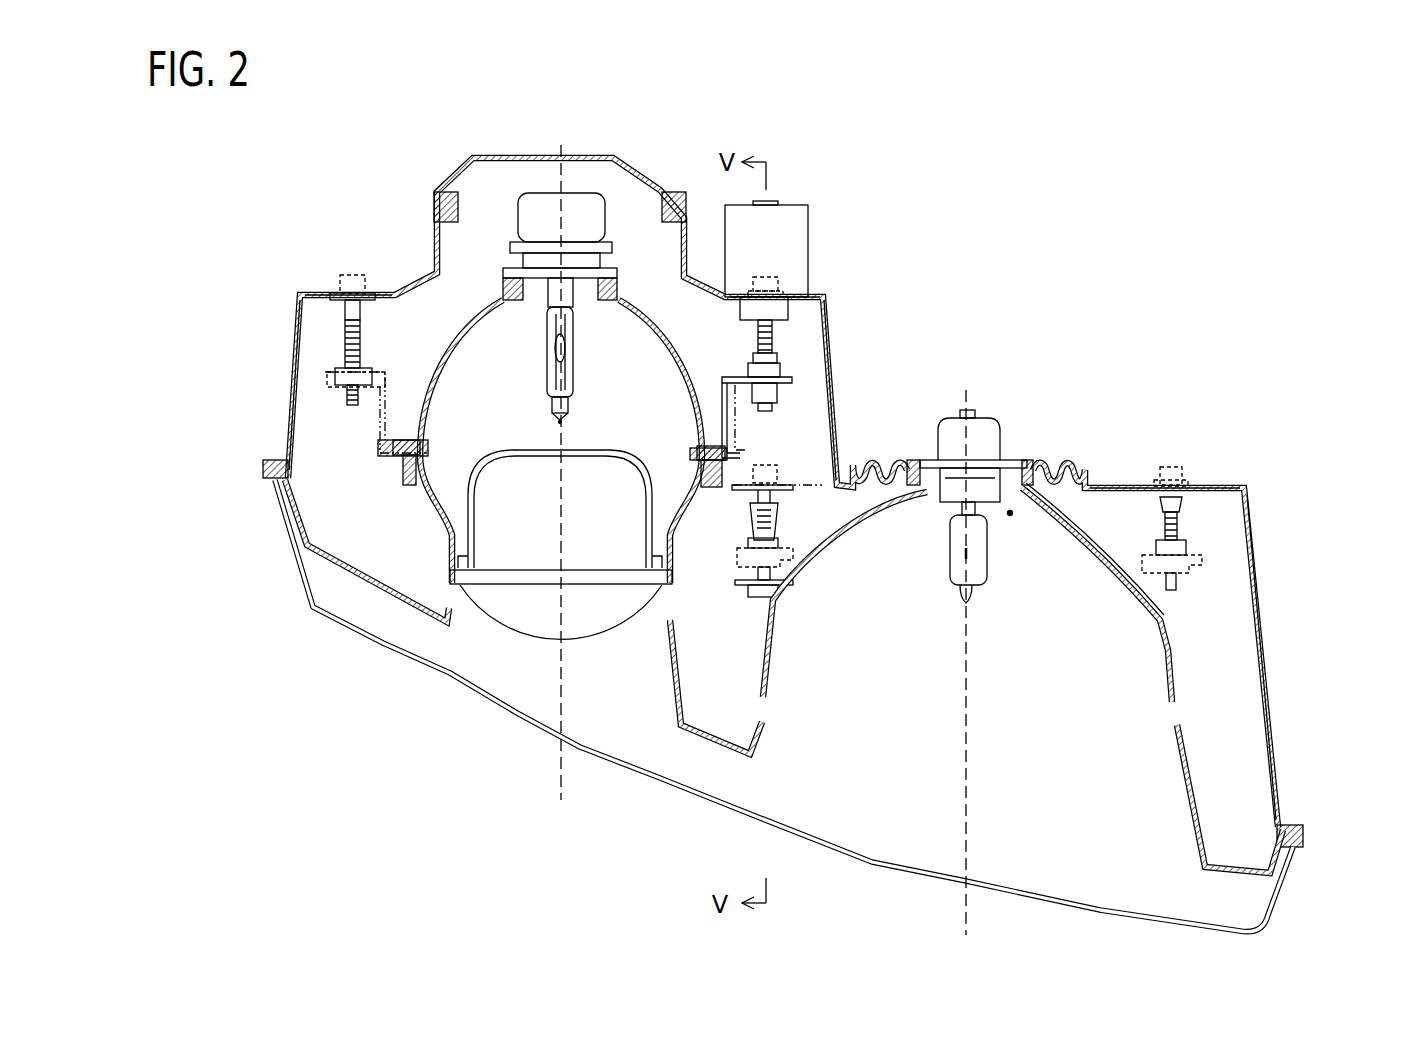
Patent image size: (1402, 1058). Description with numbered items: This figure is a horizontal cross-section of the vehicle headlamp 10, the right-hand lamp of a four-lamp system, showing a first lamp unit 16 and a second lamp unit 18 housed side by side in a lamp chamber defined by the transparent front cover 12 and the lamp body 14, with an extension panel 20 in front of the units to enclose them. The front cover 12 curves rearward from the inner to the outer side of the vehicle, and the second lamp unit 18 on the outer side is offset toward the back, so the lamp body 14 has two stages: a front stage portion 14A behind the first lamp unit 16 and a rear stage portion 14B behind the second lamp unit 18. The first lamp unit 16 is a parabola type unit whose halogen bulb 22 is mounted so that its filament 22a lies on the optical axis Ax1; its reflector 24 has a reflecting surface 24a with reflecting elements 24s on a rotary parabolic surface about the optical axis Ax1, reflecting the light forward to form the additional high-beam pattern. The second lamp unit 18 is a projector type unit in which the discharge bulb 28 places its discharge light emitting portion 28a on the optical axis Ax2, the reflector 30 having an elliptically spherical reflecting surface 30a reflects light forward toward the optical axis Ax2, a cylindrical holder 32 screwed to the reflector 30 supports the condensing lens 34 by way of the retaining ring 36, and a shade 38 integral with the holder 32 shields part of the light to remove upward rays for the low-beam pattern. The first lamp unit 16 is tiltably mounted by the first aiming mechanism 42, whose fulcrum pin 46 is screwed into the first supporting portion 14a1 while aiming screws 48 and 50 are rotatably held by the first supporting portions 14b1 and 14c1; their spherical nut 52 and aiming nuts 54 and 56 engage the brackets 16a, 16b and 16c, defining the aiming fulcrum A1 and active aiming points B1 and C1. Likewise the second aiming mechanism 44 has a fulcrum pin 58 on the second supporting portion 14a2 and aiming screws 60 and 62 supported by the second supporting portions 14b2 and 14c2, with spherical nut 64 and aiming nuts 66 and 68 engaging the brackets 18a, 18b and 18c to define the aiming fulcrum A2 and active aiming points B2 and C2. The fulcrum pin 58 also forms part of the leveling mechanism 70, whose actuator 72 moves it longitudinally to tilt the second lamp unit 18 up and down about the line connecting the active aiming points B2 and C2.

The vehicle headlamp 10 is at (1210, 265).
The front cover 12 is at (872, 855).
The lamp body 14 is at (1262, 487).
The front stage portion 14A is at (1093, 485).
The rear stage portion 14B is at (817, 283).
The first supporting portion 14a1 is at (940, 390).
The first supporting portion 14c1 is at (843, 410).
The second supporting portion 14a2 is at (861, 250).
The second supporting portion 14c2 is at (800, 275).
The first supporting portion 14b1 is at (1203, 486).
The second supporting portion 14b2 is at (323, 292).
The first lamp unit 16 is at (1027, 735).
The bracket 16a is at (798, 587).
The bracket 16b is at (1173, 593).
The bracket 16c is at (803, 557).
The second lamp unit 18 is at (498, 665).
The bracket 18a is at (723, 410).
The bracket 18b is at (380, 410).
The bracket 18c is at (740, 413).
The extension panel 20 is at (722, 742).
The halogen bulb 22 is at (983, 539).
The filament 22a is at (970, 553).
The reflector 24 is at (1088, 527).
The reflecting surface 24a is at (1115, 578).
The reflecting elements 24s is at (1082, 530).
The discharge bulb 28 is at (610, 324).
The discharge light emitting portion 28a is at (550, 349).
The reflector 30 is at (478, 300).
The reflecting surface 30a is at (643, 332).
The holder 32 is at (438, 490).
The condensing lens 34 is at (598, 625).
The retaining ring 36 is at (450, 570).
The shade 38 is at (590, 450).
The first aiming mechanism 42 is at (1237, 543).
The second aiming mechanism 44 is at (310, 360).
The fulcrum pin 46 is at (750, 563).
The aiming screw 48 is at (1165, 535).
The aiming screw 50 is at (743, 527).
The spherical nut 52 is at (770, 593).
The aiming nut 54 is at (1195, 575).
The aiming nut 56 is at (807, 577).
The fulcrum pin 58 is at (753, 340).
The aiming screw 60 is at (358, 345).
The aiming screw 62 is at (760, 340).
The spherical nut 64 is at (830, 415).
The aiming nut 66 is at (335, 388).
The aiming nut 68 is at (790, 363).
The leveling mechanism 70 is at (815, 215).
The actuator 72 is at (787, 227).
The aiming fulcrum A1 is at (750, 600).
The aiming fulcrum A2 is at (863, 332).
The active aiming point B1 is at (1197, 533).
The active aiming point B2 is at (345, 355).
The active aiming point C1 is at (783, 517).
The active aiming point C2 is at (787, 357).
The optical axis Ax1 is at (965, 755).
The optical axis Ax2 is at (560, 793).